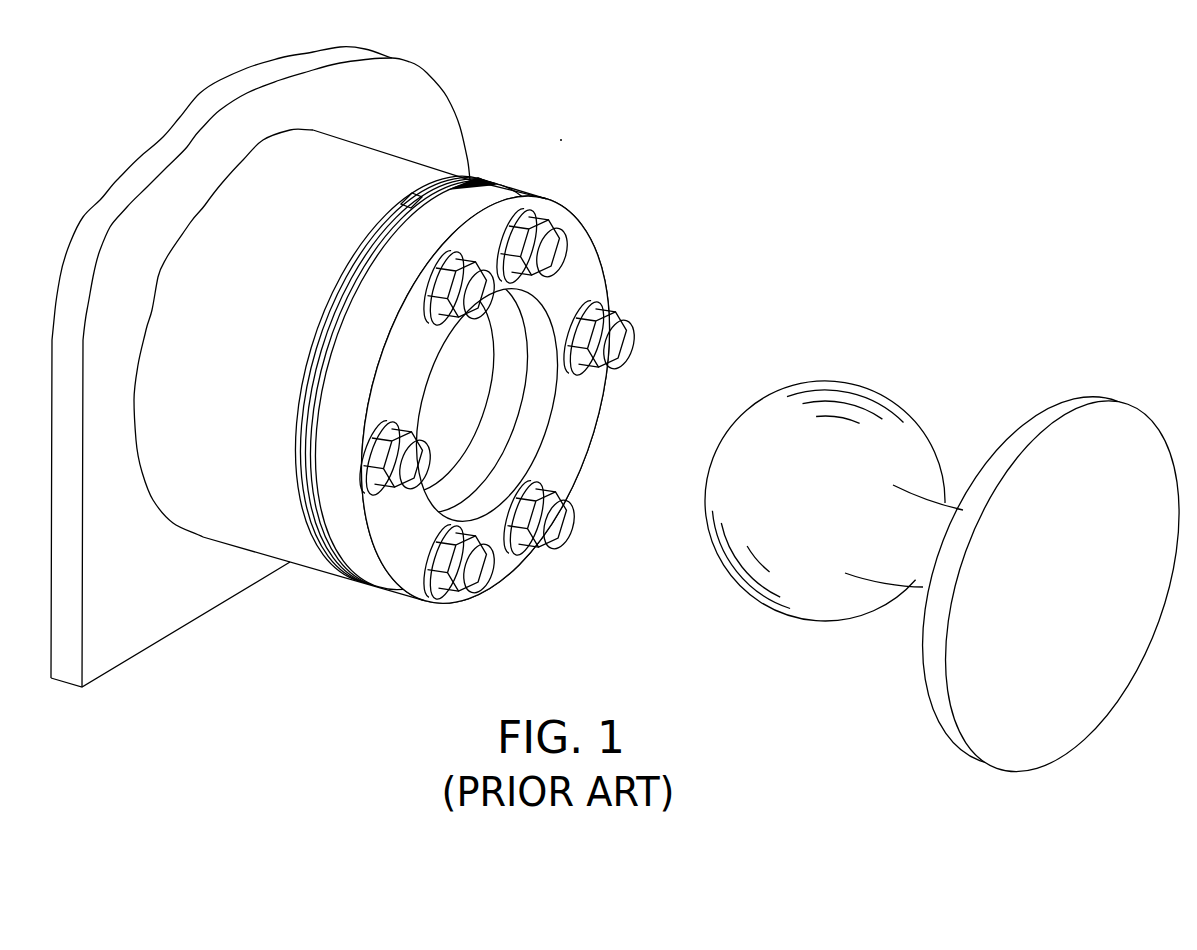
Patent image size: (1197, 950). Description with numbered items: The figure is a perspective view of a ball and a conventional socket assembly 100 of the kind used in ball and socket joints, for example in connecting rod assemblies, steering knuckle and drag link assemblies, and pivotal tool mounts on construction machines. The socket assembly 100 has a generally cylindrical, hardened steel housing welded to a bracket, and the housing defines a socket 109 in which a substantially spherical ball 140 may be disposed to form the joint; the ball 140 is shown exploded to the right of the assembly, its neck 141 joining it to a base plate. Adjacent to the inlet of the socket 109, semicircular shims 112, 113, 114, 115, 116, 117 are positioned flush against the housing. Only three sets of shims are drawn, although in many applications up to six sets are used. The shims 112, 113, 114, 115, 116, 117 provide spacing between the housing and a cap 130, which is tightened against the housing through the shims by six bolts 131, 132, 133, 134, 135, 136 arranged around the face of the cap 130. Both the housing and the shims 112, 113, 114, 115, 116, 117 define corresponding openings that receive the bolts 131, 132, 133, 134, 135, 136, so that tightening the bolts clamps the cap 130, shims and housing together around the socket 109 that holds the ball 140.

The socket assembly 100 is at (566, 137).
The socket 109 is at (399, 374).
The semicircular shim 112 is at (301, 384).
The semicircular shim 113 is at (405, 202).
The semicircular shim 114 is at (298, 418).
The semicircular shim 115 is at (414, 197).
The semicircular shim 116 is at (295, 452).
The semicircular shim 117 is at (500, 190).
The cap 130 is at (434, 381).
The bolt 131 is at (631, 330).
The bolt 132 is at (574, 531).
The bolt 133 is at (487, 592).
The bolt 134 is at (410, 492).
The bolt 135 is at (428, 316).
The bolt 136 is at (574, 244).
The ball 140 is at (843, 382).
The neck 141 is at (902, 560).